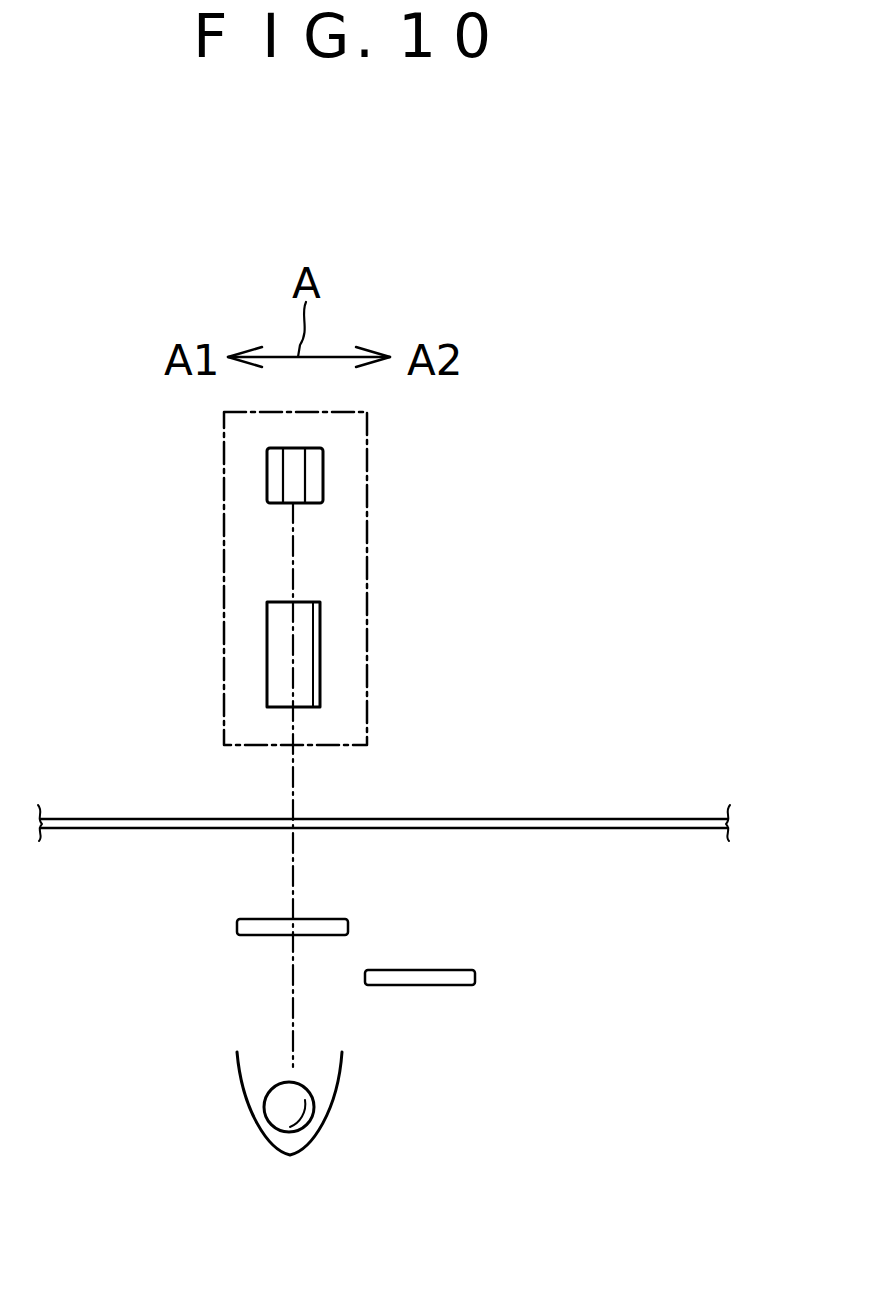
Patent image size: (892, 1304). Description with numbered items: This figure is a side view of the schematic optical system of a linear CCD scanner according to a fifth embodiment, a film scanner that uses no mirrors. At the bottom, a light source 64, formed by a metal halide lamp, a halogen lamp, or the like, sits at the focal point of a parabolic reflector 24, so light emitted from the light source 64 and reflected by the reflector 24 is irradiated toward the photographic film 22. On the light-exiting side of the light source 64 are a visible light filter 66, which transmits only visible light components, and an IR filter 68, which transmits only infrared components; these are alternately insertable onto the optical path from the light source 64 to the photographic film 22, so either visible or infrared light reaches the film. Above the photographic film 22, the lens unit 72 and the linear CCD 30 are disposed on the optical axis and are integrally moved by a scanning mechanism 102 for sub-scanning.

The scanning mechanism 102 is at (215, 571).
The linear CCD 30 is at (323, 464).
The lens unit 72 is at (311, 645).
The photographic film 22 is at (555, 819).
The visible light filter 66 is at (348, 927).
The IR filter 68 is at (475, 977).
The light source 64 is at (313, 1102).
The parabolic reflector 24 is at (298, 1155).